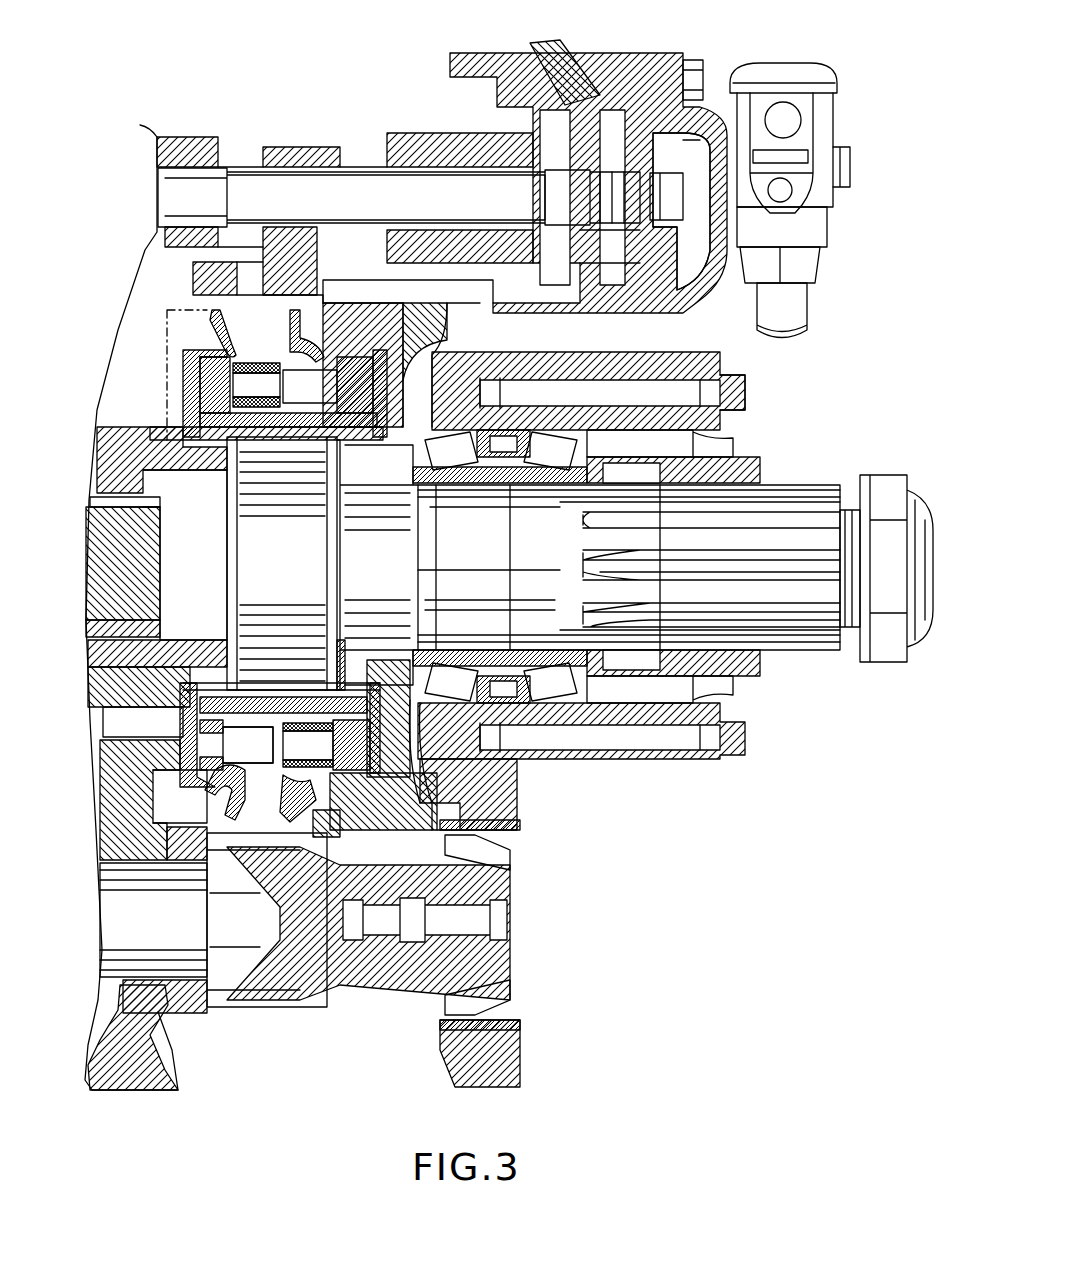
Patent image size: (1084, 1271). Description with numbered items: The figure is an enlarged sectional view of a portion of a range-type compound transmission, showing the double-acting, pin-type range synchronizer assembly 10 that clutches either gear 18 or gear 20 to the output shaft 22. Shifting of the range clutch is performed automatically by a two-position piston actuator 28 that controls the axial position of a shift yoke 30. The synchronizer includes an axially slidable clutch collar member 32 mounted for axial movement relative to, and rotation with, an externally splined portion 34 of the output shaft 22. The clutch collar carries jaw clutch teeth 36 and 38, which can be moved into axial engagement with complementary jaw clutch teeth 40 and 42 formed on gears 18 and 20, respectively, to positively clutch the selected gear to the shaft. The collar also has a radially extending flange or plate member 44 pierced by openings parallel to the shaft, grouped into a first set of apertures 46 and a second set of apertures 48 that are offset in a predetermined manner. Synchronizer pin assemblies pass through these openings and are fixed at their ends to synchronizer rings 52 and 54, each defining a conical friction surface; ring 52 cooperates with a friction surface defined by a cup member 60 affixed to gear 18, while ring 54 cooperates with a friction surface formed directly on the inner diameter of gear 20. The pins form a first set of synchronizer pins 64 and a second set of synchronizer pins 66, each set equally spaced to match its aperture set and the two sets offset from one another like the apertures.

The pin-type range synchronizer assembly 10 is at (300, 852).
The gear 18 is at (130, 447).
The gear 20 is at (450, 330).
The output shaft 22 is at (770, 540).
The two-position piston actuator 28 is at (652, 77).
The shift yoke 30 is at (318, 268).
The clutch collar member 32 is at (318, 437).
The externally splined portion 34 is at (262, 450).
The jaw clutch teeth 36 is at (207, 470).
The jaw clutch teeth 38 is at (348, 505).
The jaw clutch teeth 40 is at (205, 683).
The jaw clutch teeth 42 is at (350, 660).
The flange or plate member 44 is at (318, 822).
The first set of apertures 46 is at (258, 365).
The second set of apertures 48 is at (280, 835).
The synchronizer ring 52 is at (205, 787).
The synchronizer ring 54 is at (400, 770).
The cup member 60 is at (180, 367).
The first set of synchronizer pins 64 is at (335, 345).
The second set of synchronizer pins 66 is at (260, 727).